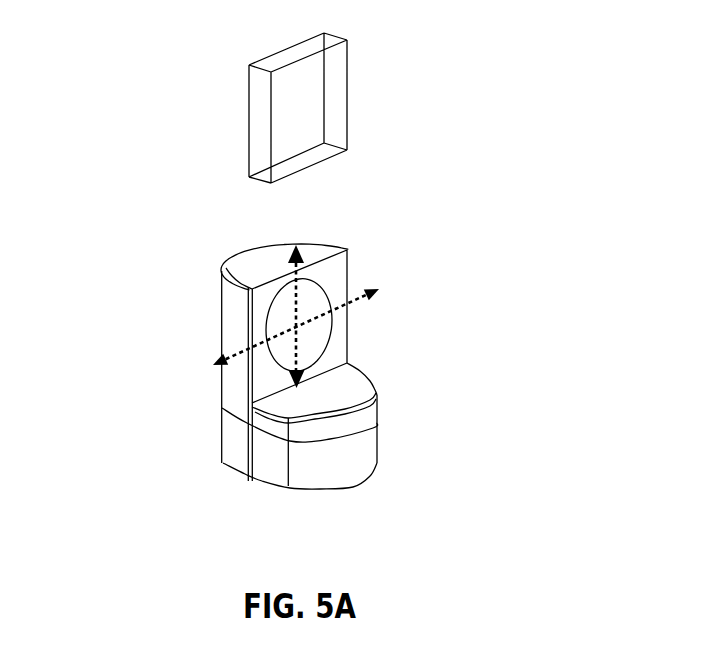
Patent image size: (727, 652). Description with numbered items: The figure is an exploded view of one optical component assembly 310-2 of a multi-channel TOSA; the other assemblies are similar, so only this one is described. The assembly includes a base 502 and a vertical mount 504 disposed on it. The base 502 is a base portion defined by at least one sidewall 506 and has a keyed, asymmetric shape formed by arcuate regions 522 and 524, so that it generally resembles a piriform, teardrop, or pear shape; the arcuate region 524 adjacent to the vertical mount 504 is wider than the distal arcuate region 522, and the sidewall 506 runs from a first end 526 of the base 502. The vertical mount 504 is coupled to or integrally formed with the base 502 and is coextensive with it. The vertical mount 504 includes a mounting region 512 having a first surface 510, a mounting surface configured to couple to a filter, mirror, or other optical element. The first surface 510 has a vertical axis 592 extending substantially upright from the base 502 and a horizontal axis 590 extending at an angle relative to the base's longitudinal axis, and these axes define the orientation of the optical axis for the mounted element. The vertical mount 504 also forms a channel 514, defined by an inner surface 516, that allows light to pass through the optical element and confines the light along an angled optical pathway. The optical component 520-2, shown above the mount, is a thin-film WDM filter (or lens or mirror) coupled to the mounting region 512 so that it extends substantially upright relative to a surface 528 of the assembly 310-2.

The optical component assembly 310-2 is at (128, 46).
The optical component 520-2 is at (236, 133).
The base 502 is at (397, 451).
The vertical mount 504 is at (194, 265).
The sidewall 506 is at (220, 435).
The first surface 510 is at (268, 380).
The mounting region 512 is at (249, 318).
The channel 514 is at (306, 289).
The inner surface 516 is at (308, 337).
The arcuate region 522 is at (329, 490).
The arcuate region 524 is at (228, 465).
The first end 526 is at (262, 480).
The surface 528 is at (343, 397).
The horizontal axis 590 is at (323, 308).
The vertical axis 592 is at (302, 247).